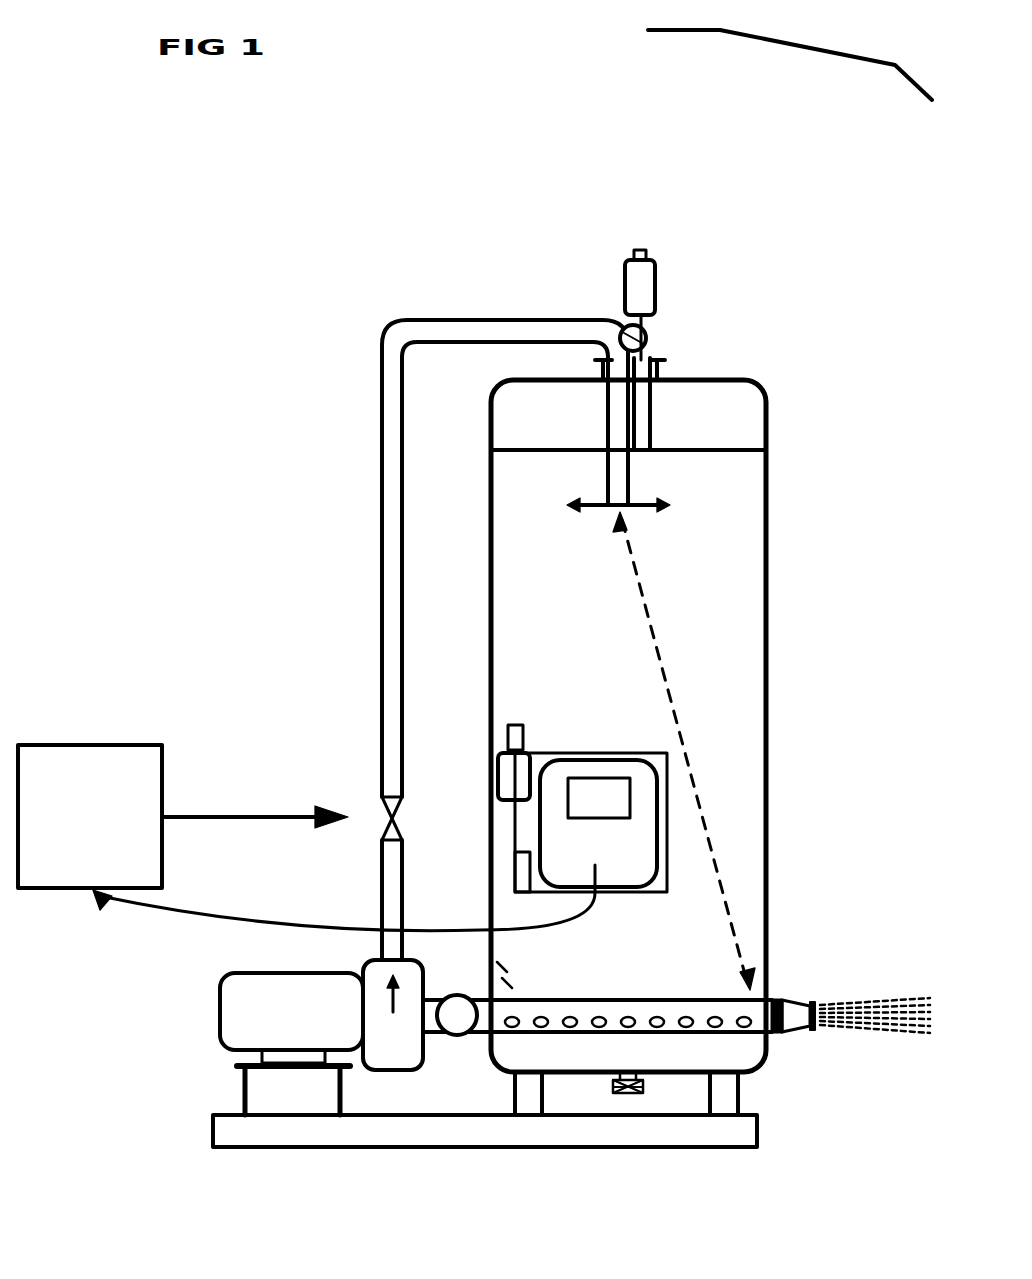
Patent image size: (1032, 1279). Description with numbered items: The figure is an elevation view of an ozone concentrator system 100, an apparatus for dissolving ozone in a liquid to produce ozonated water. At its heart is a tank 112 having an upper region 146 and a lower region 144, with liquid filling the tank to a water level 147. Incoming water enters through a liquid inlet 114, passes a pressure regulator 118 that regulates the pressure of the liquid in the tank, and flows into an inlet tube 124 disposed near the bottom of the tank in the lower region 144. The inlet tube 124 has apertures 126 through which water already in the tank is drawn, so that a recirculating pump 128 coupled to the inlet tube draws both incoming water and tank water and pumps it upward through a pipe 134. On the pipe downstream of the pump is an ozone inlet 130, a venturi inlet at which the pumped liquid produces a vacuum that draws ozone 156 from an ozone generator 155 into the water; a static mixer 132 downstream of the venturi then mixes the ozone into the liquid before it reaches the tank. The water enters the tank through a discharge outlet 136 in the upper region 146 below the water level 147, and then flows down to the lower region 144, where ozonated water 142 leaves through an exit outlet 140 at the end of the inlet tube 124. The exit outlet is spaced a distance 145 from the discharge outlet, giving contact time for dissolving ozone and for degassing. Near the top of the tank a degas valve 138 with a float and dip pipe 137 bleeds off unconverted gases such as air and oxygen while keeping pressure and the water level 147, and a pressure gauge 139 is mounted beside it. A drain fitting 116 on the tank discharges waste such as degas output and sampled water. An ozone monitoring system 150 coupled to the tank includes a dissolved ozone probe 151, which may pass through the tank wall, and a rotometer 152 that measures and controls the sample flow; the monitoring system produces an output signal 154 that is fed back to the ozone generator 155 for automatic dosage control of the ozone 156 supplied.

The ozone concentrator system 100 is at (790, 65).
The tank 112 is at (768, 718).
The liquid inlet 114 is at (445, 1036).
The drain fitting 116 is at (622, 1094).
The pressure regulator 118 is at (458, 1027).
The inlet tube 124 is at (580, 1013).
The apertures 126 is at (599, 1030).
The pump 128 is at (240, 1010).
The ozone inlet 130 is at (380, 816).
The static mixer 132 is at (382, 556).
The pipe 134 is at (385, 333).
The discharge outlet 136 is at (622, 513).
The dip pipe 137 is at (650, 415).
The degas valve 138 is at (650, 296).
The pressure gauge 139 is at (646, 338).
The exit outlet 140 is at (798, 1018).
The ozonated water 142 is at (920, 1024).
The lower region 144 is at (685, 937).
The distance 145 is at (698, 803).
The upper region 146 is at (565, 468).
The water level 147 is at (720, 448).
The ozone monitoring system 150 is at (598, 755).
The dissolved ozone probe 151 is at (515, 745).
The rotometer 152 is at (520, 855).
The output signal 154 is at (344, 898).
The ozone generator 155 is at (90, 816).
The ozone 156 is at (312, 810).